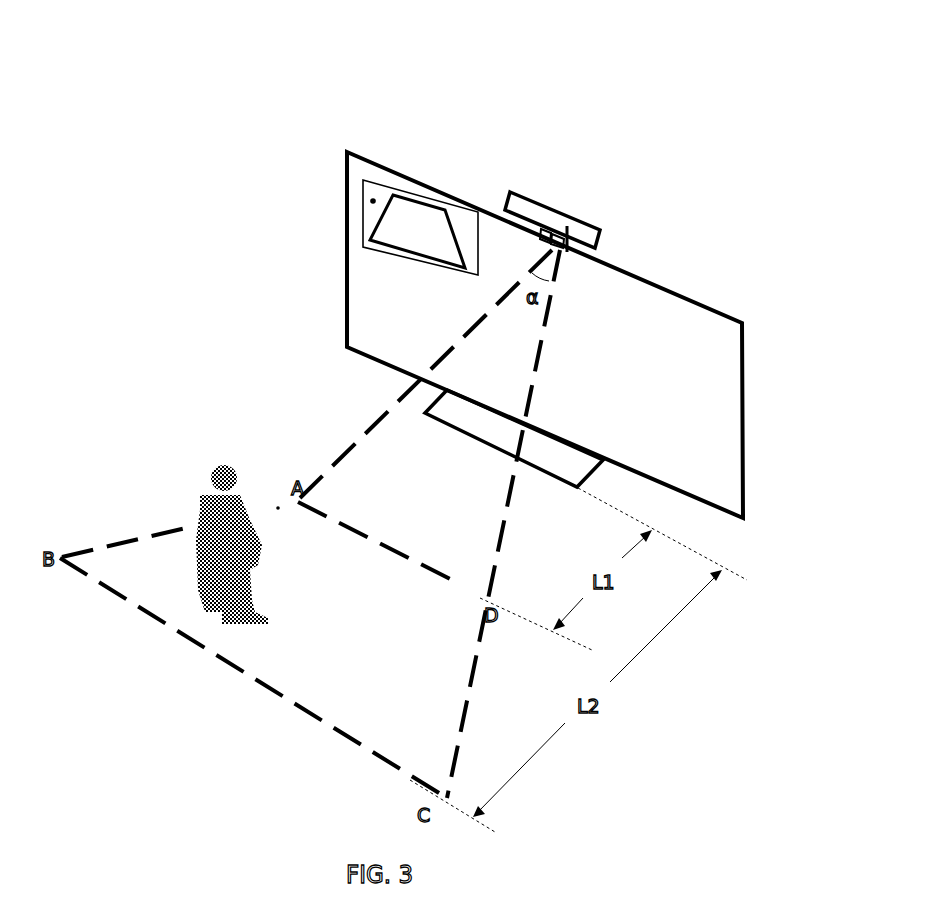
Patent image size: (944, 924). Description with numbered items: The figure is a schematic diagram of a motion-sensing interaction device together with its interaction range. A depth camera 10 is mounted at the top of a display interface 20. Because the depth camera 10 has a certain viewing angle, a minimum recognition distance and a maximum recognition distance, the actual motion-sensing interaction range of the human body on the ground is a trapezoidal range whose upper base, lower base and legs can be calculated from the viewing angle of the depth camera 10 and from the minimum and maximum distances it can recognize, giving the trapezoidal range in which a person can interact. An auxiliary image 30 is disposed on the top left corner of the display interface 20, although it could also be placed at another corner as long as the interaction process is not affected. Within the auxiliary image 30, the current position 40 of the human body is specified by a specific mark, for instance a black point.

The depth camera 10 is at (573, 228).
The display interface 20 is at (373, 308).
The auxiliary image 30 is at (370, 223).
The current position of a human body in an auxiliary image 40 is at (370, 201).